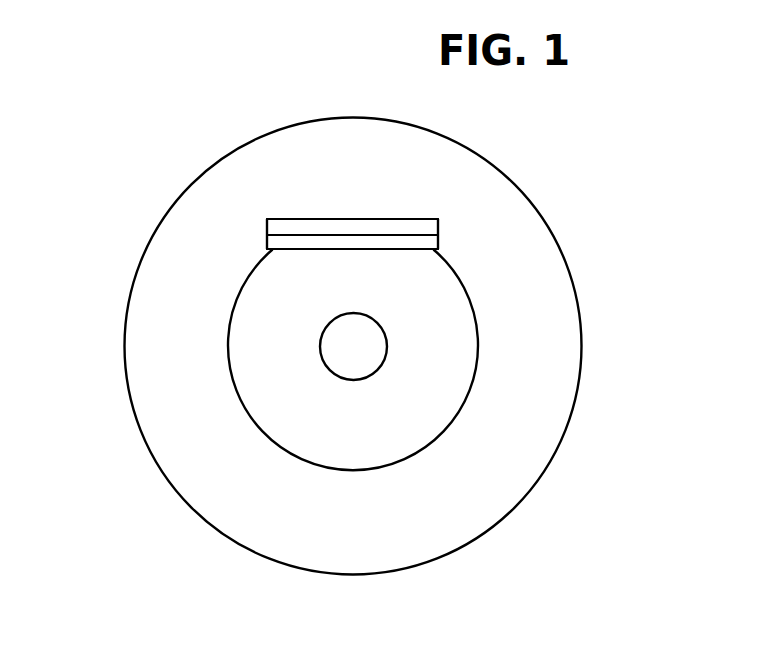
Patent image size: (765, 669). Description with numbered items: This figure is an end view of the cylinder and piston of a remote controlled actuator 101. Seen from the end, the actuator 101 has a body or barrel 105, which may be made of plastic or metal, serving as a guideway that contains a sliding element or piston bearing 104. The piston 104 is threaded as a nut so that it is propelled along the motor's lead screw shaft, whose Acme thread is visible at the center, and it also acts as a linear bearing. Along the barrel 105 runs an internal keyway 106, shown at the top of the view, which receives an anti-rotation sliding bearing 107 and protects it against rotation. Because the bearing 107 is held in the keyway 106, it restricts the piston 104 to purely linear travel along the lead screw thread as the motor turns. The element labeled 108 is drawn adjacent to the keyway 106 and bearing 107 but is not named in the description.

The remote controlled actuator 101 is at (150, 208).
The piston bearing 104 is at (443, 361).
The barrel 105 is at (512, 408).
The internal keyway 106 is at (360, 210).
The anti-rotation sliding bearing 107 is at (432, 243).
The upper bar layer 108 is at (433, 223).